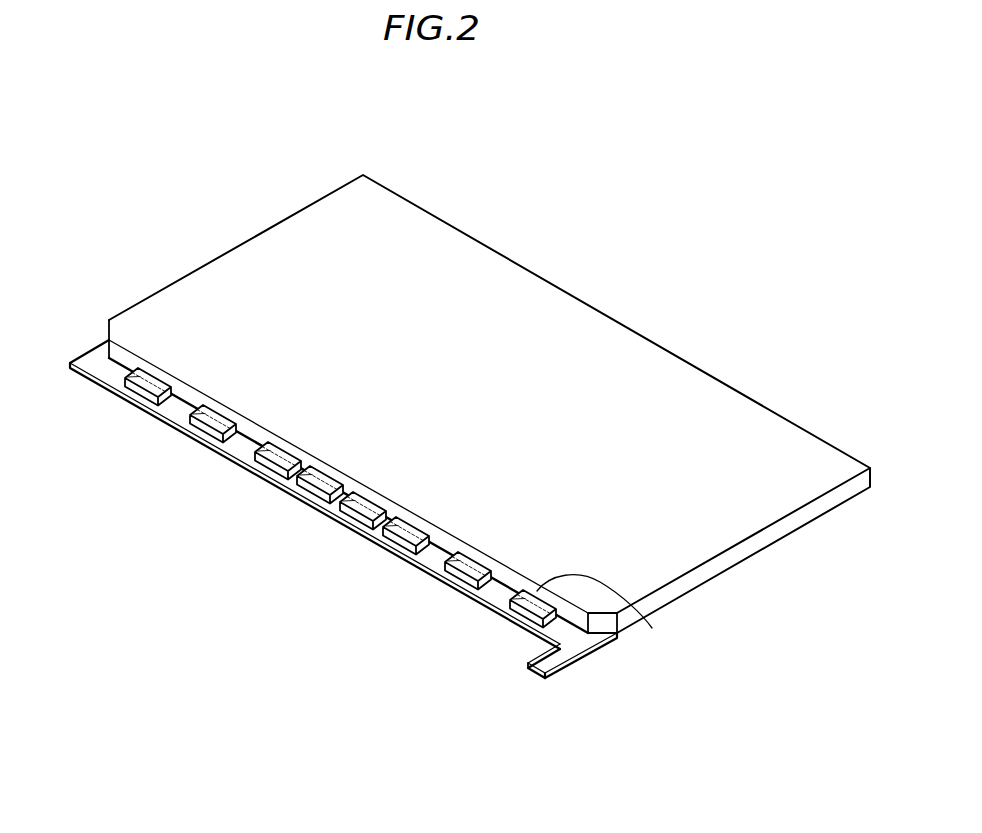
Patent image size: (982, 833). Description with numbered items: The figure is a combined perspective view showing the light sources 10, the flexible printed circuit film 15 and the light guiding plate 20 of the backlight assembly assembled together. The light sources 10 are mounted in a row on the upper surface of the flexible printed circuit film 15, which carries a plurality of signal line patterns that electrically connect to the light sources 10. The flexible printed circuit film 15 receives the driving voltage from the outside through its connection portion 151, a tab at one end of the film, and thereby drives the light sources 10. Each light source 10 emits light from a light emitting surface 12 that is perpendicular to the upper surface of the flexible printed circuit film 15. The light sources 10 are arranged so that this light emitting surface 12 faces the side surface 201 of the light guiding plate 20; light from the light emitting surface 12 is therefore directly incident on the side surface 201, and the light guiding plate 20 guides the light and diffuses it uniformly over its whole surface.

The light guiding plate 20 is at (252, 272).
The flexible printed circuit film 15 is at (98, 355).
The light source 10 is at (155, 384).
The side surface 201 is at (255, 433).
The light emitting surface 12 is at (652, 628).
The connection portion 151 is at (528, 670).